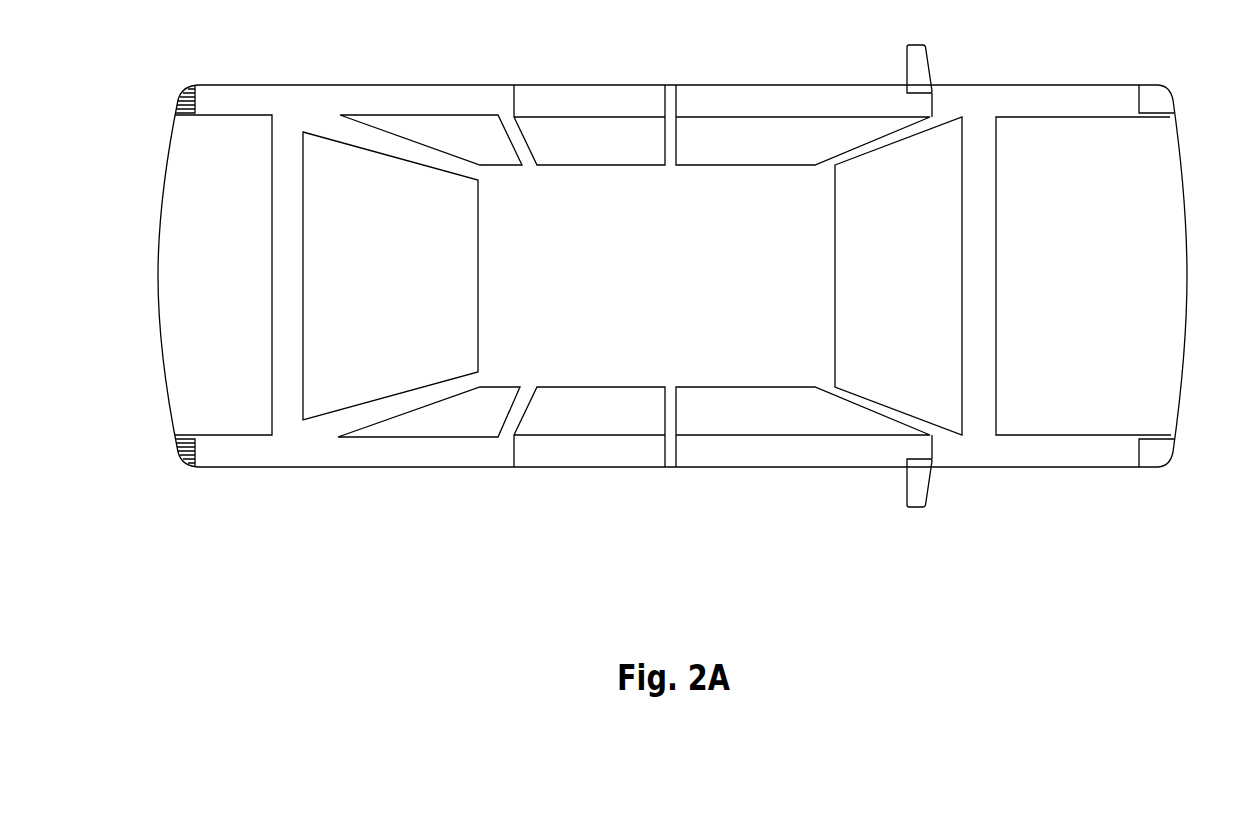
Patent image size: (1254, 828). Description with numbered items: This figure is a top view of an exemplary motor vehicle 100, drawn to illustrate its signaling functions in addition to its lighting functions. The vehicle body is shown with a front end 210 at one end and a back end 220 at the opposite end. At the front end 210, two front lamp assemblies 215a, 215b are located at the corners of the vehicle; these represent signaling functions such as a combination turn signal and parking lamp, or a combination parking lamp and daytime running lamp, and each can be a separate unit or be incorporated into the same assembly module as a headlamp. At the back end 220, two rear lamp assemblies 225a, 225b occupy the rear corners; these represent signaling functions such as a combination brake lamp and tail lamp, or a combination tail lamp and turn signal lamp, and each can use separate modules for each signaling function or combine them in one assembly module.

The motor vehicle 100 is at (688, 286).
The front end 210 is at (1198, 274).
The front lamp assembly 215a is at (1176, 98).
The front lamp assembly 215b is at (1176, 458).
The back end 220 is at (153, 283).
The rear lamp assembly 225a is at (169, 100).
The rear lamp assembly 225b is at (168, 454).